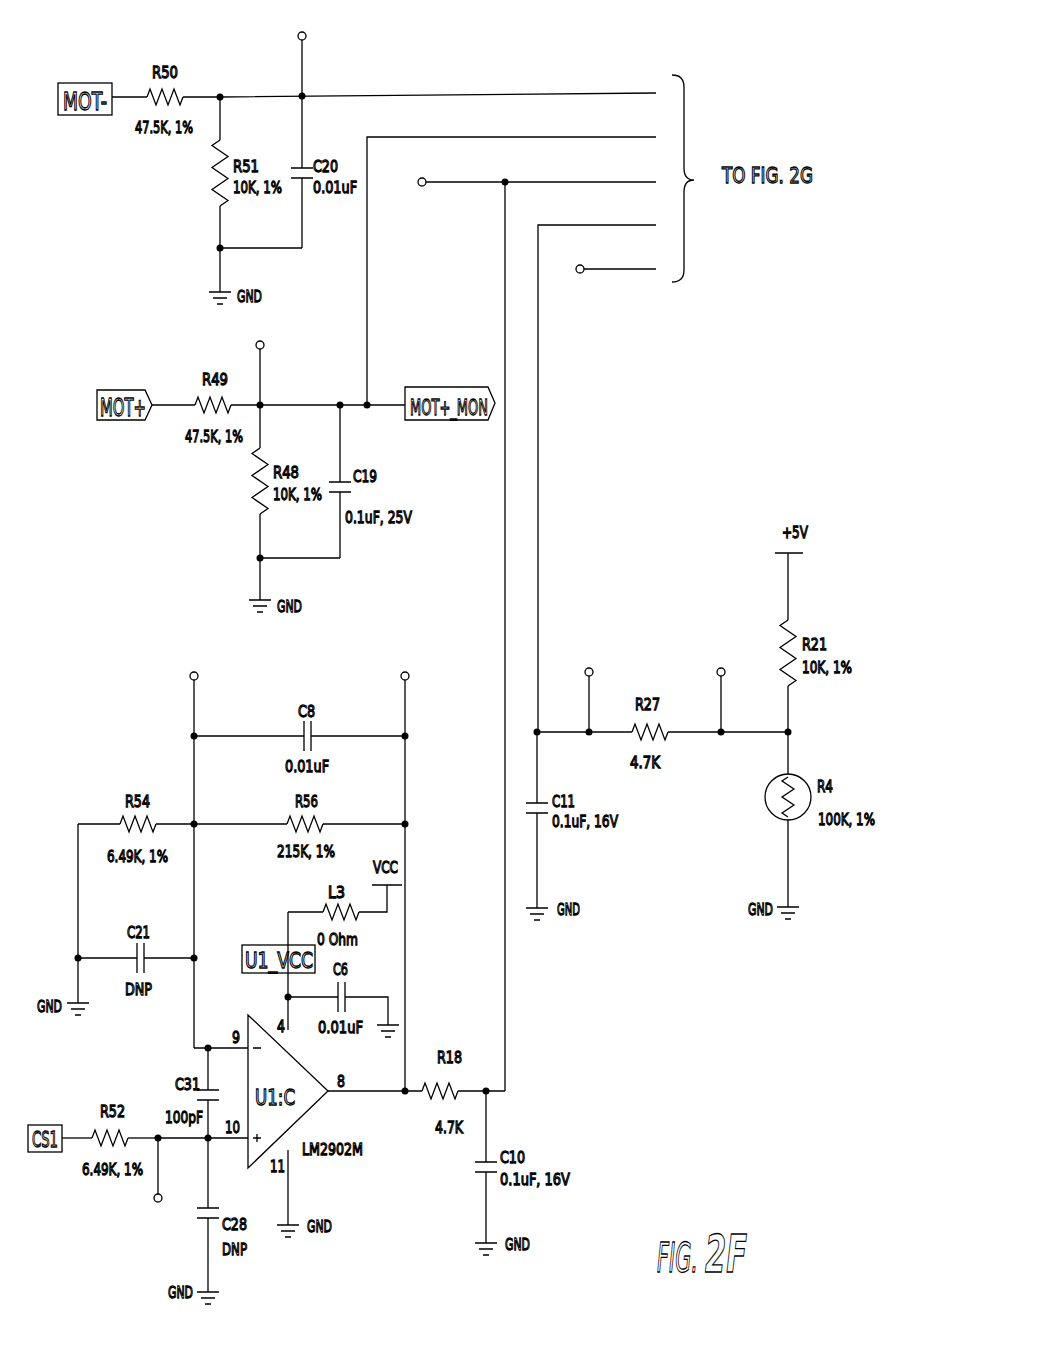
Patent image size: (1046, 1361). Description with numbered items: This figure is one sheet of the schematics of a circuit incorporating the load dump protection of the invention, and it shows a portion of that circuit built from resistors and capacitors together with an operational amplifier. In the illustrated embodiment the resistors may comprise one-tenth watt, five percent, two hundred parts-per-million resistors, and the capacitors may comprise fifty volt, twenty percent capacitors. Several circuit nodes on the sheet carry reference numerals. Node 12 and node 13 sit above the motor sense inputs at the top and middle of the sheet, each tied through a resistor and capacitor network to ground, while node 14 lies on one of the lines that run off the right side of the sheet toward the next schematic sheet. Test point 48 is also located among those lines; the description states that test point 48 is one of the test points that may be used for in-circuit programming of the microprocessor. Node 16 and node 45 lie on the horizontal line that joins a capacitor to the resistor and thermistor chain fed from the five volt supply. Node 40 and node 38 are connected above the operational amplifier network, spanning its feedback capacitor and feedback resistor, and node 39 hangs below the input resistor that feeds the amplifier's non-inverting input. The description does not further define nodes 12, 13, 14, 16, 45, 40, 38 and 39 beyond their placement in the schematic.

The motor negative sense terminal node 12 is at (302, 51).
The motor positive sense terminal node 13 is at (261, 359).
The motor monitor output node 14 is at (533, 197).
The test point 48 is at (605, 270).
The thermistor sense node 16 is at (589, 686).
The thermistor divider node 45 is at (721, 686).
The amplifier inverting input node 40 is at (195, 690).
The amplifier output feedback node 38 is at (405, 690).
The current sense input node 39 is at (158, 1187).